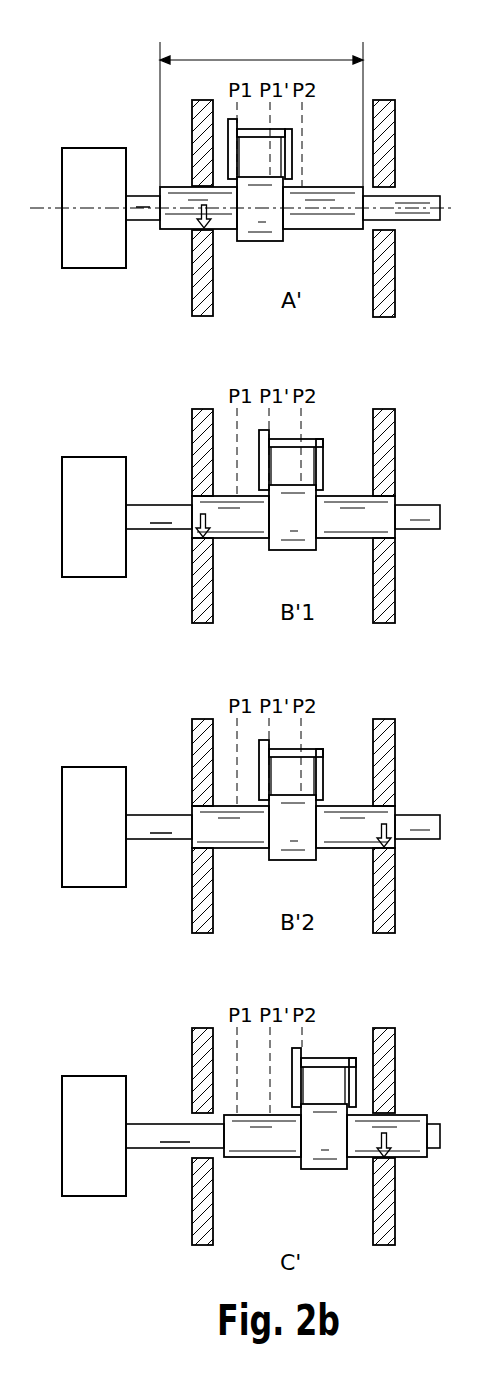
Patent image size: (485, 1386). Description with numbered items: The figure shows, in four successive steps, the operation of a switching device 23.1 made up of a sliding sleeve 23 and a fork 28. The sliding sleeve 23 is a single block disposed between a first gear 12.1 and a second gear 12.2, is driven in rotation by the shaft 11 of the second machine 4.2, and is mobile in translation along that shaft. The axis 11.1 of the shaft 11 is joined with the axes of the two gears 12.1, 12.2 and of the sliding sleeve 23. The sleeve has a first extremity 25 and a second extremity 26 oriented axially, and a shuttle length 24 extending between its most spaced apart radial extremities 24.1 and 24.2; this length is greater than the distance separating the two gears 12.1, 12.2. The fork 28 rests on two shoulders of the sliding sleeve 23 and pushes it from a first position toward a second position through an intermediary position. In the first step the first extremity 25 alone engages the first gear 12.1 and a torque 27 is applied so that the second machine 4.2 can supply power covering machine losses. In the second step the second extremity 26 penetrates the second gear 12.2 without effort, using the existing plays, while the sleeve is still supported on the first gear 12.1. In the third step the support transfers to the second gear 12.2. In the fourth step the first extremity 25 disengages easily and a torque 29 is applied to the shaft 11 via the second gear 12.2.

The second machine 4.2 is at (78, 270).
The shaft 11 is at (143, 196).
The axis 11.1 is at (44, 204).
The first gear 12.1 is at (197, 108).
The second gear 12.2 is at (388, 100).
The sliding sleeve 23 is at (333, 236).
The switching device 23.1 is at (128, 78).
The shuttle length 24 is at (277, 60).
The first radial extremity 24.1 is at (160, 208).
The second radial extremity 24.2 is at (377, 203).
The first extremity 25 is at (178, 230).
The second extremity 26 is at (335, 187).
The torque 27 is at (214, 213).
The fork 28 is at (288, 125).
The torque 29 is at (390, 832).